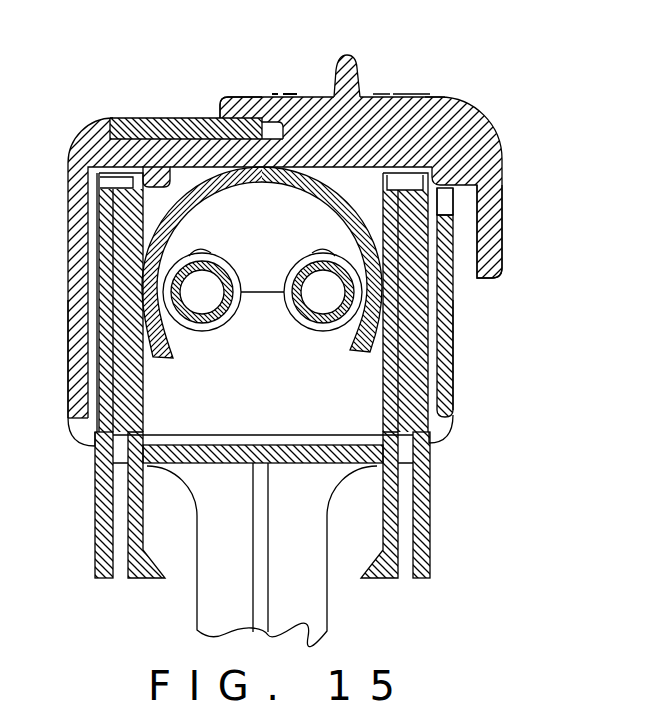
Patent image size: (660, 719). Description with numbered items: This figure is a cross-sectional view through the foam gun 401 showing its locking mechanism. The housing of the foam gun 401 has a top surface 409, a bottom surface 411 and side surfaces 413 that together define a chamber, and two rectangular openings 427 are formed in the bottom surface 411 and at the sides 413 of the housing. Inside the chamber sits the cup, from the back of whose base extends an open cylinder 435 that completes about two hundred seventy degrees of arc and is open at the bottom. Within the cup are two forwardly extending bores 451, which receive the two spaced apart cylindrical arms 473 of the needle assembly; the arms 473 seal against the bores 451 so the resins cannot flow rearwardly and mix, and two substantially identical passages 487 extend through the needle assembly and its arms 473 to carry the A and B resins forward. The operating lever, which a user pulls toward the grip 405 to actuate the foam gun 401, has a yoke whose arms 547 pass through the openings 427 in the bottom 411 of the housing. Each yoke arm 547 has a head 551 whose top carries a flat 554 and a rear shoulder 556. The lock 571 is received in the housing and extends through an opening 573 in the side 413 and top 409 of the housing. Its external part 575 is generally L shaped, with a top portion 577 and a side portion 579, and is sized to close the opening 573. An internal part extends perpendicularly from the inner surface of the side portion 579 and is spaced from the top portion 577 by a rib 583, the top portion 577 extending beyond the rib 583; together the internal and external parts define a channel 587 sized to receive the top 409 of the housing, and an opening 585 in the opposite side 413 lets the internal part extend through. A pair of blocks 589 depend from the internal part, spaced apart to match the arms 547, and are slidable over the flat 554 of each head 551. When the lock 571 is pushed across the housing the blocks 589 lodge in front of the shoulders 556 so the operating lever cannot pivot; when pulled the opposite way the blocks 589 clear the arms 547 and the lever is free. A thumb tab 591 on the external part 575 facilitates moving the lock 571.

The foam gun 401 is at (482, 91).
The grip 405 is at (462, 363).
The top surface 409 is at (140, 117).
The bottom surface 411 is at (222, 466).
The side surfaces 413 is at (68, 373).
The rectangular openings 427 is at (85, 436).
The open cylinder 435 is at (215, 196).
The bores 451 is at (327, 249).
The cylindrical arms 473 is at (213, 314).
The passages 487 is at (204, 290).
The yoke arms 547 is at (95, 551).
The head 551 is at (100, 326).
The flat 554 is at (117, 181).
The rear shoulder 556 is at (118, 182).
The lock 571 is at (527, 100).
The opening 573 is at (448, 208).
The external part 575 is at (440, 95).
The top portion 577 is at (240, 97).
The side portion 579 is at (503, 257).
The rib 583 is at (280, 95).
The opening 585 is at (68, 153).
The channel 587 is at (262, 130).
The blocks 589 is at (455, 204).
The thumb tab 591 is at (360, 67).